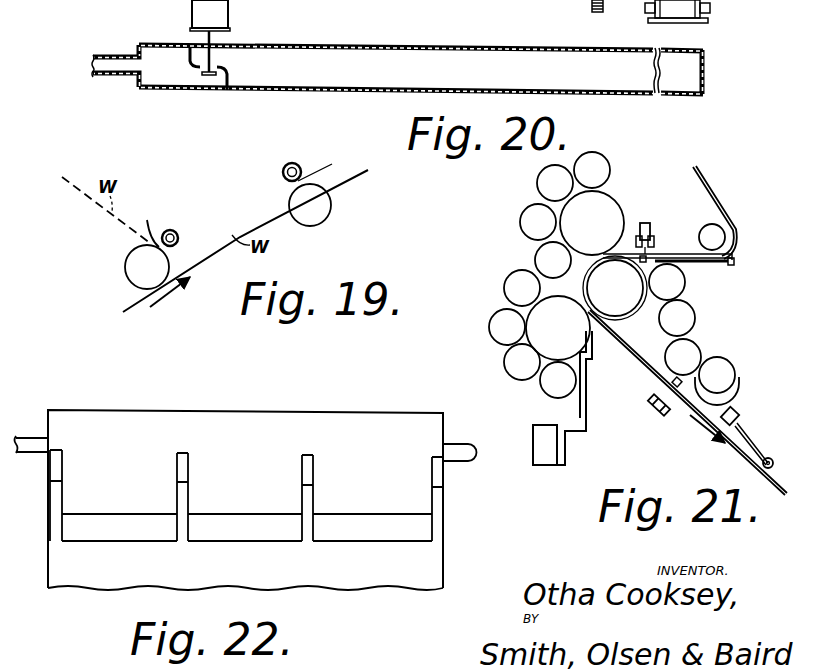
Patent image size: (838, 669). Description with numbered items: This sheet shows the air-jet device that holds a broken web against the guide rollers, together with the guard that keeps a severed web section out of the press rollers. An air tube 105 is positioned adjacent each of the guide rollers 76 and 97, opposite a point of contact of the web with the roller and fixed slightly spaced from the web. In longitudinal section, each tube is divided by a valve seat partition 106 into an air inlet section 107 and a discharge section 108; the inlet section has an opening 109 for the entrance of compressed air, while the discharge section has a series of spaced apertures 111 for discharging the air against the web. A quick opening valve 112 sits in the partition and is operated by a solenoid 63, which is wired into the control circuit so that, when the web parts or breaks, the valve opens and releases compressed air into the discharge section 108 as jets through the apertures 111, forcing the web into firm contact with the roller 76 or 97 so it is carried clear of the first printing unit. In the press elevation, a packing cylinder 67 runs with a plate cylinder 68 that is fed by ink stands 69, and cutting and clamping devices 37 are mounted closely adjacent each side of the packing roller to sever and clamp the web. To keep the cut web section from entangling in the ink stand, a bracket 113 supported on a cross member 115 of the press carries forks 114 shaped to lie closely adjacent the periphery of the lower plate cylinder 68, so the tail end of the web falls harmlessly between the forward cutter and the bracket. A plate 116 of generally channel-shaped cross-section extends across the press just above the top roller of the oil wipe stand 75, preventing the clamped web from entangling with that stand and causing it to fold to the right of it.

In FIG. 21, the cutting and clamping device 37 is at (648, 224).
In FIG. 20, the solenoid 63 is at (213, 13).
In FIG. 21, the packing cylinder 67 is at (633, 304).
In FIG. 21, the plate cylinder 68 is at (605, 207).
In FIG. 22, the plate cylinder 68 is at (340, 428).
In FIG. 21, the ink stand 69 is at (530, 221).
In FIG. 21, the oil wipe stand 75 is at (682, 318).
In FIG. 19, the guide roller 76 is at (322, 208).
In FIG. 19, the guide roller 97 is at (138, 257).
In FIG. 20, the air tube 105 is at (712, 44).
In FIG. 19, the air tube 105 is at (171, 229).
In FIG. 20, the valve seat partition 106 is at (222, 73).
In FIG. 20, the air inlet section 107 is at (158, 58).
In FIG. 20, the discharge section 108 is at (508, 67).
In FIG. 19, the discharge section 108 is at (178, 236).
In FIG. 20, the opening 109 is at (121, 63).
In FIG. 20, the apertures 111 is at (360, 93).
In FIG. 19, the apertures 111 is at (165, 220).
In FIG. 20, the quick opening valve 112 is at (270, 30).
In FIG. 21, the bracket 113 is at (586, 401).
In FIG. 22, the bracket 113 is at (397, 578).
In FIG. 21, the forks 114 is at (593, 355).
In FIG. 22, the forks 114 is at (302, 470).
In FIG. 21, the cross member 115 is at (551, 456).
In FIG. 21, the plate 116 is at (721, 263).